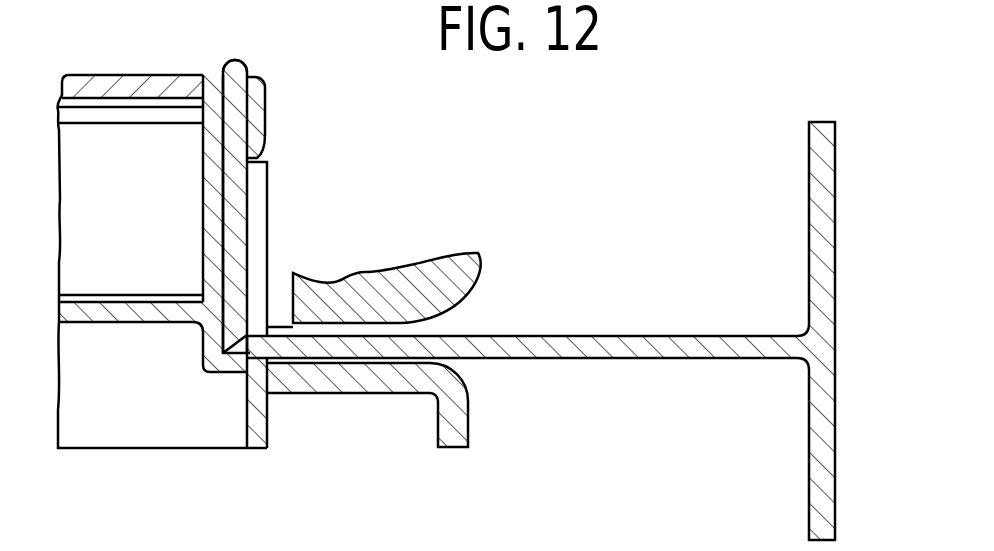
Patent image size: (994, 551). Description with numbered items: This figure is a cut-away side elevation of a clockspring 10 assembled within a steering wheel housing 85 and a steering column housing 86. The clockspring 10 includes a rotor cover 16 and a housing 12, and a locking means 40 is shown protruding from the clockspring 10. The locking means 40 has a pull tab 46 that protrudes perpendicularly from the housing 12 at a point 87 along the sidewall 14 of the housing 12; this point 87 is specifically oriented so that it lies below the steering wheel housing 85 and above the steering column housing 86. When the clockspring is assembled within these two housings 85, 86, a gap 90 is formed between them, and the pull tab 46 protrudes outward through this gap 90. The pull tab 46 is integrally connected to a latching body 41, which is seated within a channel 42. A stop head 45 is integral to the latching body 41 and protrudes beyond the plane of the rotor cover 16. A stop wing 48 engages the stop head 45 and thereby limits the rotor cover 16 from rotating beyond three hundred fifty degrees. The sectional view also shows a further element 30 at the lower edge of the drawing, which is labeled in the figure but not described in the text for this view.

The clockspring 10 is at (300, 125).
The housing 12 is at (258, 427).
The sidewall 14 is at (267, 408).
The rotor cover 16 is at (148, 73).
The base 30 is at (480, 550).
The locking means 40 is at (658, 336).
The latching body 41 is at (248, 245).
The channel 42 is at (263, 272).
The stop head 45 is at (237, 64).
The pull tab 46 is at (545, 336).
The stop wing 48 is at (259, 111).
The steering wheel housing 85 is at (470, 268).
The steering column housing 86 is at (470, 441).
The point 87 is at (258, 352).
The gap 90 is at (460, 362).